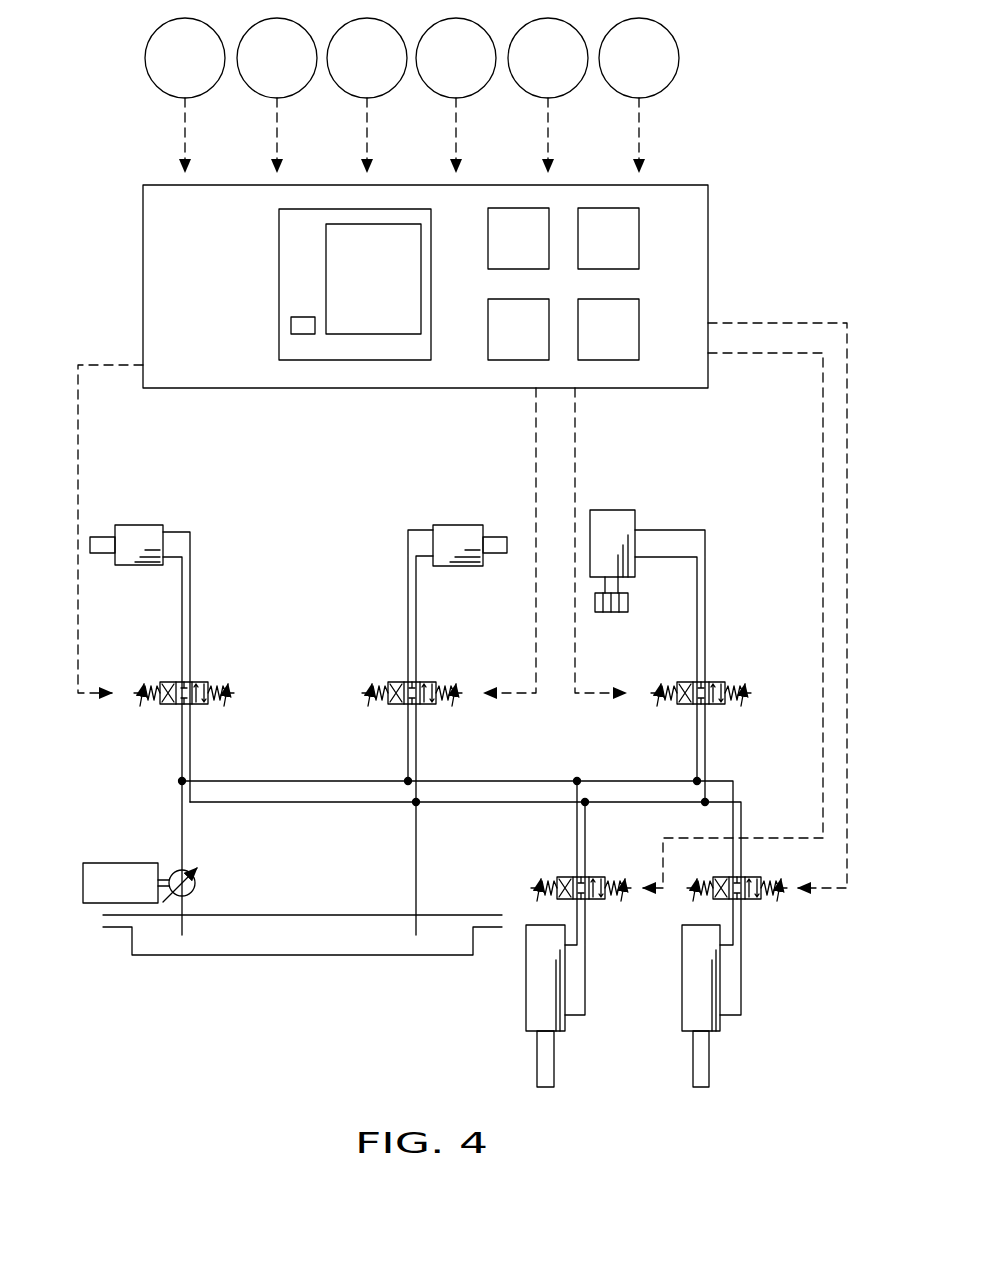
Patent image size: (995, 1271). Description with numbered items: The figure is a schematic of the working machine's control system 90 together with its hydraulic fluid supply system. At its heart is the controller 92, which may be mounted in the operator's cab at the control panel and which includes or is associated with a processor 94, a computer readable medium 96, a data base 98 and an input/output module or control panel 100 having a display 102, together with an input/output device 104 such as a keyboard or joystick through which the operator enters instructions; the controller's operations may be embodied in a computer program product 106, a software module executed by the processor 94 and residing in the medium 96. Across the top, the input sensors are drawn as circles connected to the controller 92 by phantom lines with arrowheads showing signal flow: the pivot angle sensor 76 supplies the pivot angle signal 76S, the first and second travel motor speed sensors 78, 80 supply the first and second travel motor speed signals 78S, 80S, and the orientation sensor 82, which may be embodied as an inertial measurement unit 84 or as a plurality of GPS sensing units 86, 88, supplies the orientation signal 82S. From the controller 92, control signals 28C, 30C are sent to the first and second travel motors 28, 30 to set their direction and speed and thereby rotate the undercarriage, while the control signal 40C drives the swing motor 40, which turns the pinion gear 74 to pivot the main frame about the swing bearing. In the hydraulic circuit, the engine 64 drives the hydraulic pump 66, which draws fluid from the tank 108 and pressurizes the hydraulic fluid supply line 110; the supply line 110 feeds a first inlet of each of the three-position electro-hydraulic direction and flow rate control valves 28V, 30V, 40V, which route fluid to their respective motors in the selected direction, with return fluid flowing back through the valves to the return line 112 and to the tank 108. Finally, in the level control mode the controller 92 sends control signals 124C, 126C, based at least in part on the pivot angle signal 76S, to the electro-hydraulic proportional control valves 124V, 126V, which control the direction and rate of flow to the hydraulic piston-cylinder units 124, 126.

The control system 90 is at (86, 148).
The pivot angle sensor 76 is at (197, 76).
The first travel motor speed sensor 78 is at (289, 76).
The second travel motor speed sensor 80 is at (379, 76).
The orientation sensor 82 is at (547, 58).
The inertial measurement unit 84 is at (486, 76).
The GPS sensing unit 86 is at (578, 76).
The GPS sensing unit 88 is at (669, 76).
The pivot angle signal 76S is at (183, 133).
The first travel motor speed signal 78S is at (275, 133).
The second travel motor speed signal 80S is at (365, 133).
The orientation signal 82S is at (458, 126).
The controller 92 is at (709, 240).
The input/output module or control panel 100 is at (277, 226).
The display 102 is at (324, 263).
The input/output device 104 is at (289, 326).
The processor 94 is at (530, 257).
The computer readable medium 96 is at (620, 257).
The data base 98 is at (530, 348).
The computer program product 106 is at (627, 348).
The control signal 28C is at (79, 452).
The control signal 30C is at (535, 468).
The control signal 40C is at (577, 443).
The control signal 124C is at (797, 355).
The control signal 126C is at (770, 323).
The first travel motor 28 is at (138, 533).
The second travel motor 30 is at (456, 535).
The swing motor 40 is at (610, 520).
The pinion gear 74 is at (629, 603).
The electro-hydraulic direction and flow rate control valve 28V is at (157, 713).
The electro-hydraulic direction and flow rate control valve 30V is at (386, 713).
The electro-hydraulic direction and flow rate control valve 40V is at (674, 713).
The electro-hydraulic proportional control valve 124V is at (552, 868).
The electro-hydraulic proportional control valve 126V is at (768, 906).
The hydraulic fluid supply line 110 is at (180, 818).
The return line 112 is at (414, 872).
The engine 64 is at (120, 870).
The hydraulic pump 66 is at (200, 884).
The tank 108 is at (300, 956).
The hydraulic piston-cylinder unit 124 is at (536, 988).
The hydraulic piston-cylinder unit 126 is at (690, 993).